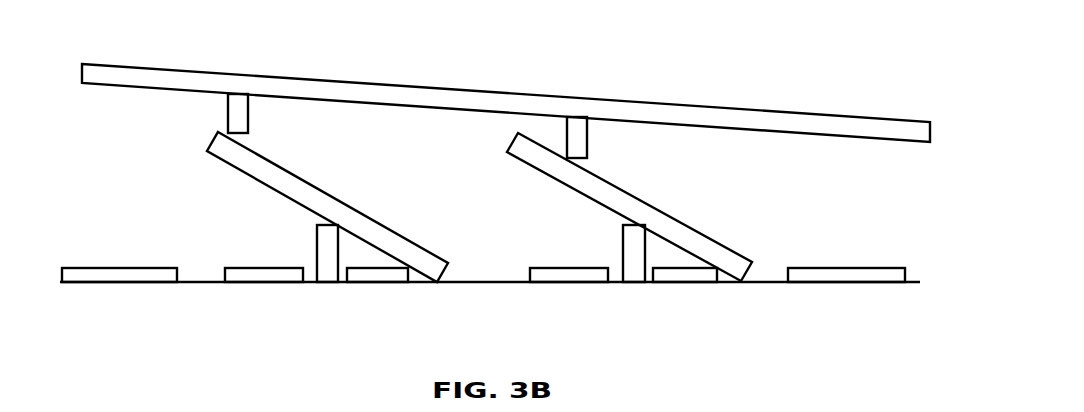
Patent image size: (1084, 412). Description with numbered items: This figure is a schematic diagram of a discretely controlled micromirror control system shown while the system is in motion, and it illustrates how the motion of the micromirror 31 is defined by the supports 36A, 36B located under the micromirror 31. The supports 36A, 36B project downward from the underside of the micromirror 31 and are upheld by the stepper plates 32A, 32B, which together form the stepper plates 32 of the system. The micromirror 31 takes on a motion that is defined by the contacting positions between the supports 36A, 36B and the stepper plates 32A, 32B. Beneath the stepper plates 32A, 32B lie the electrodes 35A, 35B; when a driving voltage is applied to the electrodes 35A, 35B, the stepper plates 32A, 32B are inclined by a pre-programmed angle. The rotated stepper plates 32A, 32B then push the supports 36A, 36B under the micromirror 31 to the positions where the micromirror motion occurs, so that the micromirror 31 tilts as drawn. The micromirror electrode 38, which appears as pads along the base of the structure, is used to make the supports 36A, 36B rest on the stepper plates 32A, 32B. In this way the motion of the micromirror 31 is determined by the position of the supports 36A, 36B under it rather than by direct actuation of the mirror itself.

The micromirror 31 is at (168, 68).
The stepper plates 32 is at (466, 162).
The stepper plate 32A is at (262, 170).
The stepper plate 32B is at (575, 177).
The electrode 35A is at (375, 273).
The electrode 35B is at (693, 273).
The support 36A is at (223, 112).
The support 36B is at (577, 130).
The micromirror electrode 38 is at (123, 272).